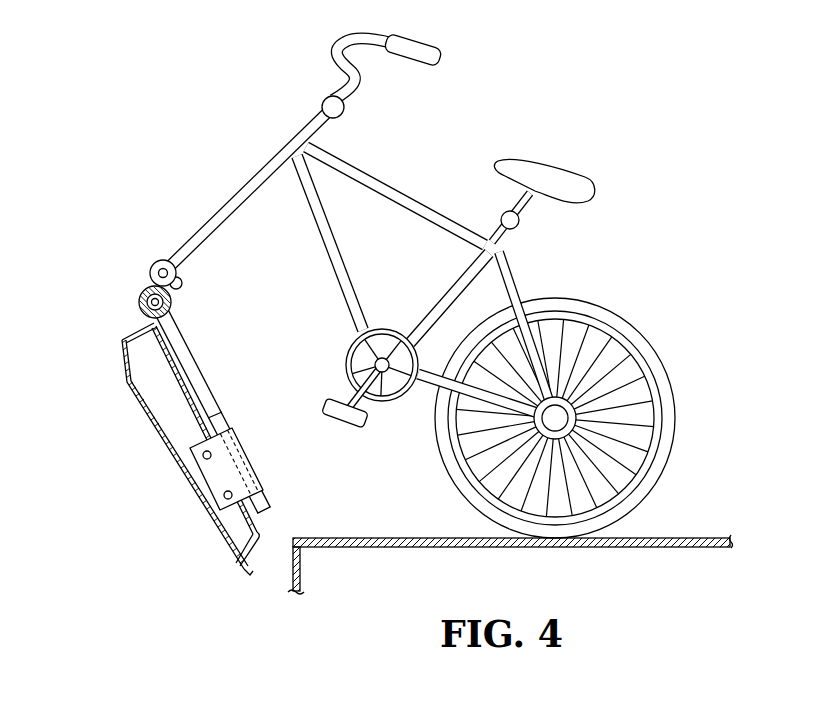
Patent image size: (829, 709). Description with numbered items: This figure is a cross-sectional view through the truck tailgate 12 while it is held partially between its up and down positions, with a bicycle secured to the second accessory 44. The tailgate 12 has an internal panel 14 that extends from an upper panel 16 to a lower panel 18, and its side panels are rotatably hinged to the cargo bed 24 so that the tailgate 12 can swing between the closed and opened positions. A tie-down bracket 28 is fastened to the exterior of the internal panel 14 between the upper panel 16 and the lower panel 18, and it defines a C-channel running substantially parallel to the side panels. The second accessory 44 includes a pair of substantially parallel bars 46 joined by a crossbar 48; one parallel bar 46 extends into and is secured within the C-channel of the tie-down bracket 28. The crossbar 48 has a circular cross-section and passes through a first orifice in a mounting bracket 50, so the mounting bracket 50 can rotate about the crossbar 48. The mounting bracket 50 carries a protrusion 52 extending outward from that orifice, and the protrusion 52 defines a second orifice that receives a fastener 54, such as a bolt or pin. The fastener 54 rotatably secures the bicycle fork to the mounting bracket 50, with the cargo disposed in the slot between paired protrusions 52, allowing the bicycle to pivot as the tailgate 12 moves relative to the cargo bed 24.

The tailgate 12 is at (210, 453).
The internal panel 14 is at (262, 520).
The upper panel 16 is at (140, 330).
The lower panel 18 is at (254, 556).
The cargo bed 24 is at (684, 530).
The tie-down bracket 28 is at (260, 451).
The second accessory 44 is at (203, 364).
The parallel bar 46 is at (207, 376).
The crossbar 48 is at (173, 301).
The mounting bracket 50 is at (188, 292).
The protrusion 52 is at (150, 272).
The fastener 54 is at (162, 270).